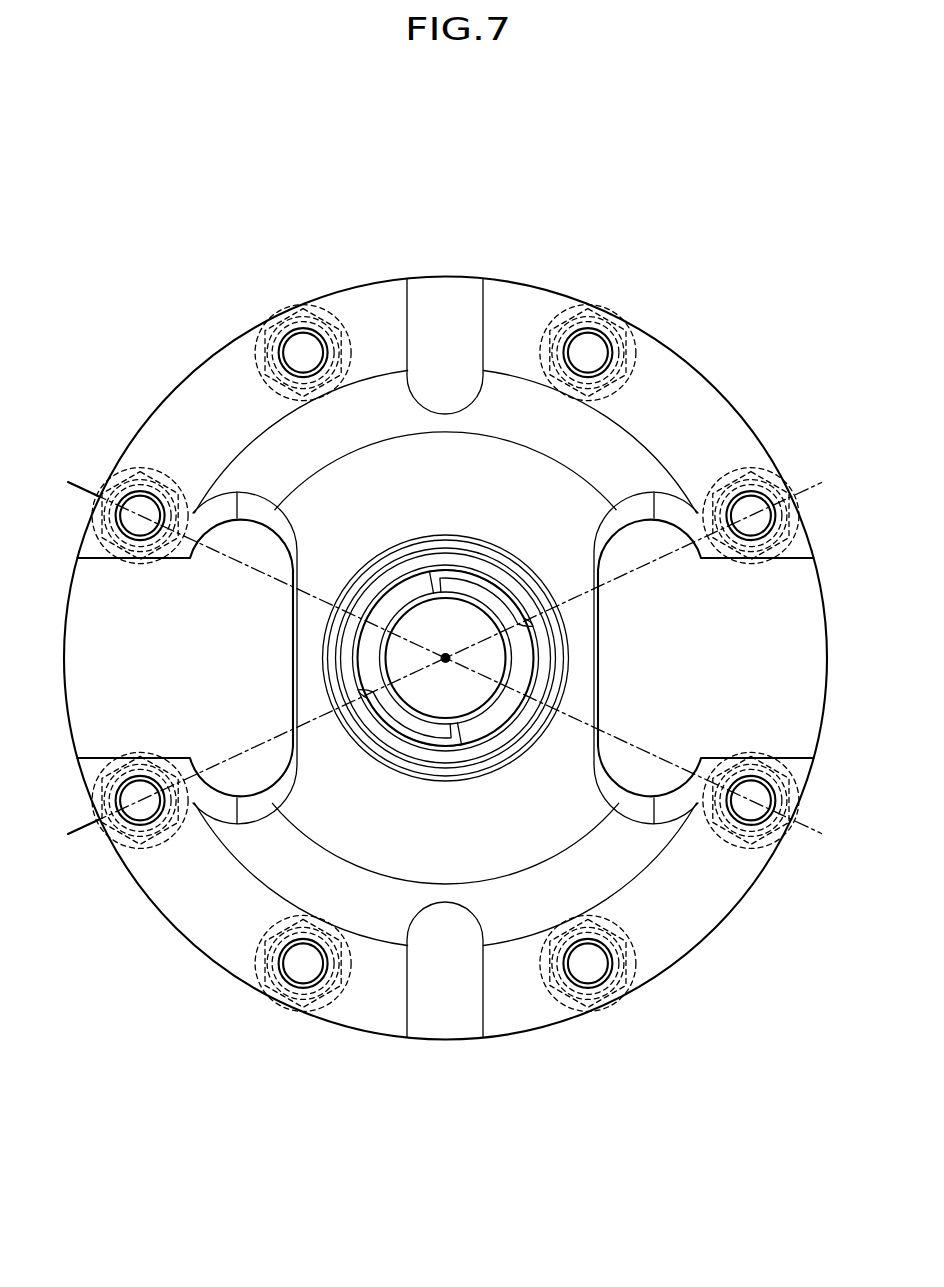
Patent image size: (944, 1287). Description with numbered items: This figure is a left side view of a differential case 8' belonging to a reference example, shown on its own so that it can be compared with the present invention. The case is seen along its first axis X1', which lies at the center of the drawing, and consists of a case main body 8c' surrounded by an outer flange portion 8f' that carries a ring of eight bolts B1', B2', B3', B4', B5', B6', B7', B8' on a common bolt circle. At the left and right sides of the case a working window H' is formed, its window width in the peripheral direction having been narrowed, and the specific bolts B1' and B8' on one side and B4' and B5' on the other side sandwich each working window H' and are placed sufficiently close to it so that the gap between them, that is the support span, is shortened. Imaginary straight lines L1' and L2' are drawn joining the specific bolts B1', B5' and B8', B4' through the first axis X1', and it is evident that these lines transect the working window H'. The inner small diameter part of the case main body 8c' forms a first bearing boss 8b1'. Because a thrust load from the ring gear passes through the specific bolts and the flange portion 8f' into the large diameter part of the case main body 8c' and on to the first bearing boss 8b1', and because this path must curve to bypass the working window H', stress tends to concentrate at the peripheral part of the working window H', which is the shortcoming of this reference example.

The differential case 8' is at (445, 610).
The flange portion 8f' is at (484, 627).
The case main body 8c' is at (445, 658).
The first bearing boss 8b1' is at (456, 639).
The working window H' is at (446, 658).
The first axis X1' is at (485, 743).
The imaginary straight line L1' is at (443, 612).
The imaginary straight line L2' is at (433, 708).
The specific bolt B1' is at (140, 439).
The bolt B2' is at (297, 309).
The bolt B3' is at (617, 311).
The specific bolt B4' is at (776, 477).
The specific bolt B5' is at (769, 863).
The bolt B6' is at (597, 1004).
The bolt B7' is at (303, 1011).
The specific bolt B8' is at (140, 862).